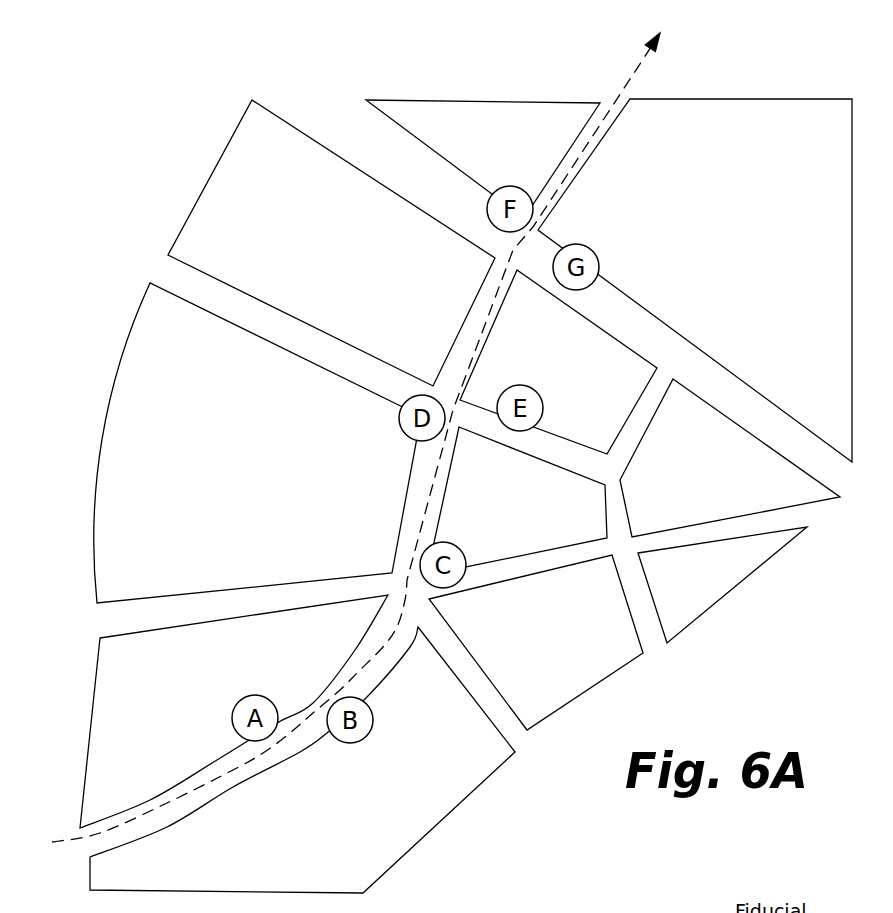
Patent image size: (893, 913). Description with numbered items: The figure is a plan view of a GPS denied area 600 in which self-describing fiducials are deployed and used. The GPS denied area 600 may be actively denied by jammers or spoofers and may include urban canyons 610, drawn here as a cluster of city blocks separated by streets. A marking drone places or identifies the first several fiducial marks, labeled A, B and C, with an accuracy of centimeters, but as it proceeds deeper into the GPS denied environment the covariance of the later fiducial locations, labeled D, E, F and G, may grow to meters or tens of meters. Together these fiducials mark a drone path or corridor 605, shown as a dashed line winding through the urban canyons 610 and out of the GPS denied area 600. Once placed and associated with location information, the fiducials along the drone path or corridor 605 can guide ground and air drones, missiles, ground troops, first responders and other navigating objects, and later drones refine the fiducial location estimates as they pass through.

The GPS denied area 600 is at (270, 510).
The drone path or corridor 605 is at (377, 422).
The urban canyons 610 is at (286, 95).